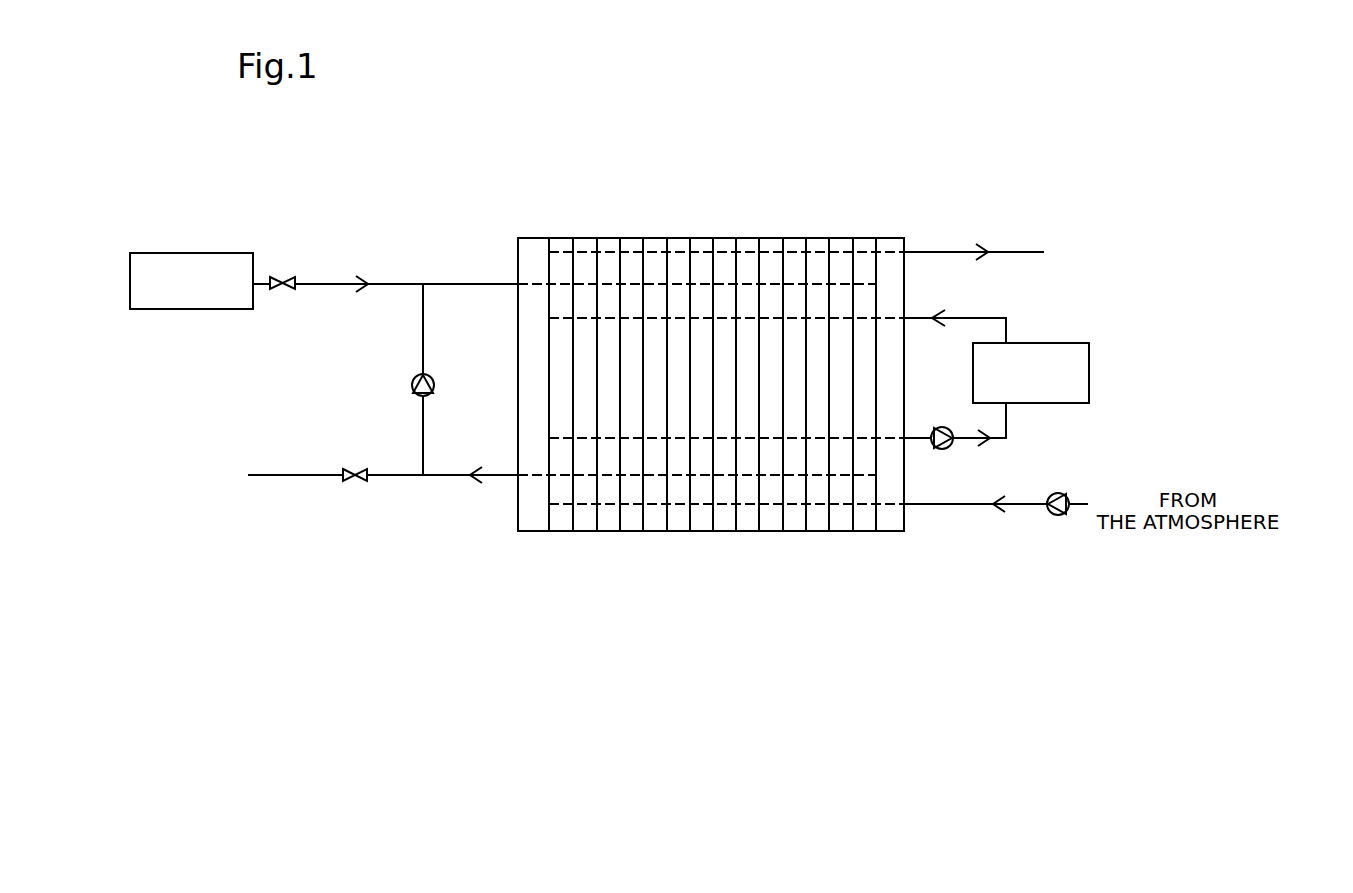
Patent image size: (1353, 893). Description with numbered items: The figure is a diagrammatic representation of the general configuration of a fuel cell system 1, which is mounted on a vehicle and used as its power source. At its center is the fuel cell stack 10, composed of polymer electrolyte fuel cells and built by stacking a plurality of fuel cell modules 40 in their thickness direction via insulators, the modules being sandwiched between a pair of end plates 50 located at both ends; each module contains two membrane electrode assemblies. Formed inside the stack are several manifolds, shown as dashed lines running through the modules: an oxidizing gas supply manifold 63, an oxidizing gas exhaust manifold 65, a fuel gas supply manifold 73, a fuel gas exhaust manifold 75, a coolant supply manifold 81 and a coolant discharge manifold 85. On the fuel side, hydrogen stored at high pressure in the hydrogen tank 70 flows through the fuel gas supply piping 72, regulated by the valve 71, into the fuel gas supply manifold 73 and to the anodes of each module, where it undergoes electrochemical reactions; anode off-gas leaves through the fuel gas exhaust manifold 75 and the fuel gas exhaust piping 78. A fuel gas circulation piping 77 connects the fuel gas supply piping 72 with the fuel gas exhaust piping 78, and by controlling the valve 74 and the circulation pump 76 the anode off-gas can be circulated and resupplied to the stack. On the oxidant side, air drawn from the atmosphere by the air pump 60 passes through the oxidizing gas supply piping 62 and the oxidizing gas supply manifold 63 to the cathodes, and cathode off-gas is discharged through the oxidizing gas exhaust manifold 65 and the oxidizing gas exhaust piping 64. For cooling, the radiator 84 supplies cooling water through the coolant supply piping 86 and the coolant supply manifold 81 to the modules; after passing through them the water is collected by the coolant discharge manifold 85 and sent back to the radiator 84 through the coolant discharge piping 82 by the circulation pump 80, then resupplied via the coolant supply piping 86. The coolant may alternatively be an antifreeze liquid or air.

The fuel cell system 1 is at (993, 128).
The fuel cell stack 10 is at (843, 204).
The fuel cell modules 40 is at (677, 515).
The end plates 50 is at (532, 522).
The air pump 60 is at (1055, 494).
The oxidizing gas supply piping 62 is at (941, 502).
The oxidizing gas supply manifold 63 is at (838, 506).
The oxidizing gas exhaust piping 64 is at (968, 250).
The oxidizing gas exhaust manifold 65 is at (788, 250).
The hydrogen tank 70 is at (208, 253).
The valve 71 is at (284, 290).
The fuel gas supply piping 72 is at (468, 285).
The fuel gas supply manifold 73 is at (612, 283).
The valve 74 is at (355, 470).
The fuel gas exhaust manifold 75 is at (606, 476).
The circulation pump 76 is at (435, 385).
The fuel gas circulation piping 77 is at (424, 352).
The fuel gas exhaust piping 78 is at (440, 474).
The circulation pump 80 is at (941, 427).
The coolant supply manifold 81 is at (682, 318).
The coolant discharge piping 82 is at (1006, 422).
The radiator 84 is at (1089, 372).
The coolant discharge manifold 85 is at (654, 440).
The coolant supply piping 86 is at (1006, 320).